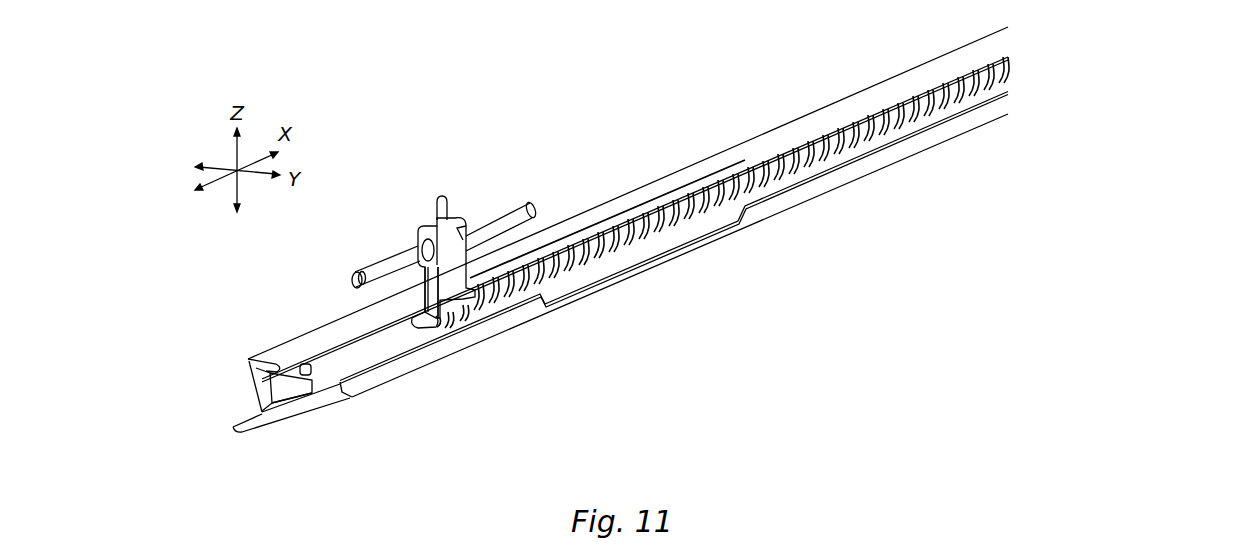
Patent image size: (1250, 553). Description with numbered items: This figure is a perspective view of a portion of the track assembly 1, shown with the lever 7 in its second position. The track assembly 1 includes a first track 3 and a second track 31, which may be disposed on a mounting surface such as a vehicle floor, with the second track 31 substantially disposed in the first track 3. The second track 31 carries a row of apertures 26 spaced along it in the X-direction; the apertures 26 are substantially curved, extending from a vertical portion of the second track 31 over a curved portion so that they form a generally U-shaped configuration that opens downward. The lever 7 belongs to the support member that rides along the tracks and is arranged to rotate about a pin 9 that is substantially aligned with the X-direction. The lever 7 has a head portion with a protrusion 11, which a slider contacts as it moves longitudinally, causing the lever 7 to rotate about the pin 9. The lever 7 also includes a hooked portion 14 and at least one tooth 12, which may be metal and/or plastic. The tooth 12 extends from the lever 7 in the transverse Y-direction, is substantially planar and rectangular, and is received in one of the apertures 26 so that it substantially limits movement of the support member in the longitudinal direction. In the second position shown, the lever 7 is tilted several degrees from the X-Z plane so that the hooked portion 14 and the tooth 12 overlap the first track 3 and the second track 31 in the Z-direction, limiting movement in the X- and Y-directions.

The track assembly 1 is at (612, 100).
The first track 3 is at (808, 204).
The lever 7 is at (410, 231).
The pin 9 is at (508, 212).
The protrusion 11 is at (449, 197).
The tooth 12 is at (422, 334).
The hooked portion 14 is at (420, 322).
The apertures 26 is at (636, 218).
The second track 31 is at (302, 406).